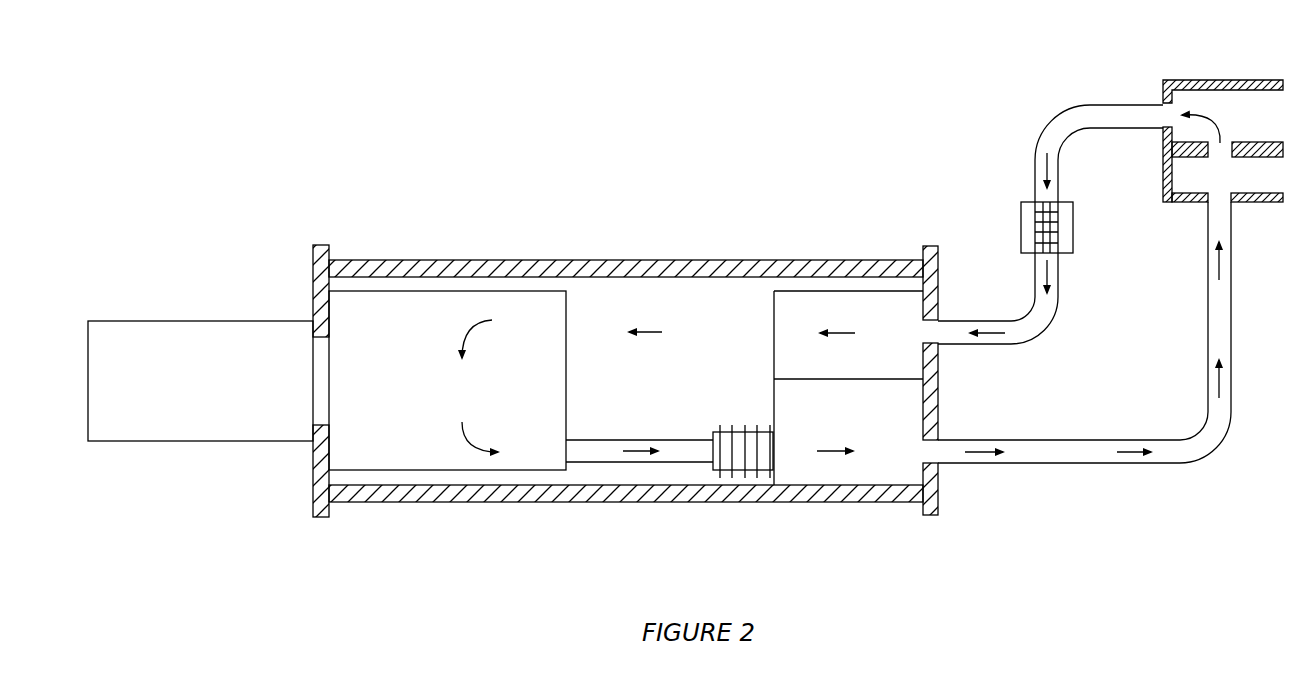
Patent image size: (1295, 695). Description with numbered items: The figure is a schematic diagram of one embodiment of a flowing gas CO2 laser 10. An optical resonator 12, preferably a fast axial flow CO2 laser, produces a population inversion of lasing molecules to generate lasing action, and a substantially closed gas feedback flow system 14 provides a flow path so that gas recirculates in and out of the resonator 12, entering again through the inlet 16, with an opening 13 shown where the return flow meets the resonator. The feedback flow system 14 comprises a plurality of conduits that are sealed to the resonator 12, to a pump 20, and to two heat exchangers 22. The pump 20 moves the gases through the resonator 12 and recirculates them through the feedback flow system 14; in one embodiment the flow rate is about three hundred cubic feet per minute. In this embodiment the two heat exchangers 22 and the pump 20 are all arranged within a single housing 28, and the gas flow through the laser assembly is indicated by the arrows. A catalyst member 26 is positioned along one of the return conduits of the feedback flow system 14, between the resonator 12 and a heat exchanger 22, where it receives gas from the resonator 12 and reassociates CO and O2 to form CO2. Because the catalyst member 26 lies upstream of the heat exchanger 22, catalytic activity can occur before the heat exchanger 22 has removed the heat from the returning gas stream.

The flowing gas CO2 laser 10 is at (905, 133).
The optical resonator 12 is at (1193, 80).
The inlet opening 13 is at (1165, 114).
The gas feedback flow system 14 is at (1037, 313).
The inlet 16 is at (1221, 200).
The pump 20 is at (361, 450).
The heat exchanger 22 is at (912, 302).
The catalyst member 26 is at (1020, 215).
The housing 28 is at (573, 260).